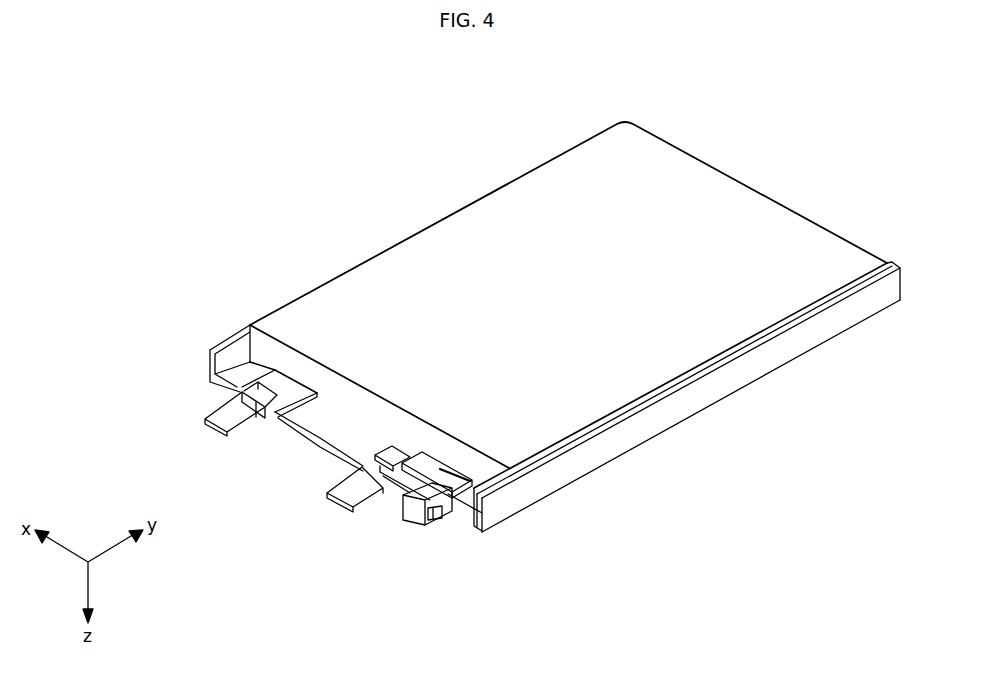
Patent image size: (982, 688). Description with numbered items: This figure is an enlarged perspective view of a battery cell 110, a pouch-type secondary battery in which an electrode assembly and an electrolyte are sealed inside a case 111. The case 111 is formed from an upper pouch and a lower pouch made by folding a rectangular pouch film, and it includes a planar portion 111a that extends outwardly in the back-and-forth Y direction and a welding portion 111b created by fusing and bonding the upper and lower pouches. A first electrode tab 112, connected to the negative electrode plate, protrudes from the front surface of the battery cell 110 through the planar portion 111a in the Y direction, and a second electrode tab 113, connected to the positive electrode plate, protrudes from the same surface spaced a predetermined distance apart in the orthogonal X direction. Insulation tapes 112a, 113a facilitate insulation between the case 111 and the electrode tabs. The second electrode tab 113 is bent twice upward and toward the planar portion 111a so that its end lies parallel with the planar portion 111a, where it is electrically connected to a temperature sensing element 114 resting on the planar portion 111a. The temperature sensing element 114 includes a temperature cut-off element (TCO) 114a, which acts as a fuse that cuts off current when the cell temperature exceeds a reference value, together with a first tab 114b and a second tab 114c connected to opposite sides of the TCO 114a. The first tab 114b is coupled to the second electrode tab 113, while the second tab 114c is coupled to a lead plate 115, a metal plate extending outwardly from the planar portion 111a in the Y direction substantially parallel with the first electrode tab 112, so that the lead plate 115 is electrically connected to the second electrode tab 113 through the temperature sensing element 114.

The battery cell 110 is at (505, 344).
The case 111 is at (825, 248).
The planar portion 111a is at (315, 440).
The welding portion 111b is at (230, 358).
The first electrode tab 112 is at (223, 422).
The insulation tape 112a is at (240, 393).
The second electrode tab 113 is at (412, 508).
The insulation tape 113a is at (440, 522).
The temperature sensing element 114 is at (459, 407).
The temperature cut-off element (TCO) 114a is at (440, 468).
The first tab 114b is at (462, 474).
The second tab 114c is at (407, 422).
The lead plate 115 is at (345, 492).